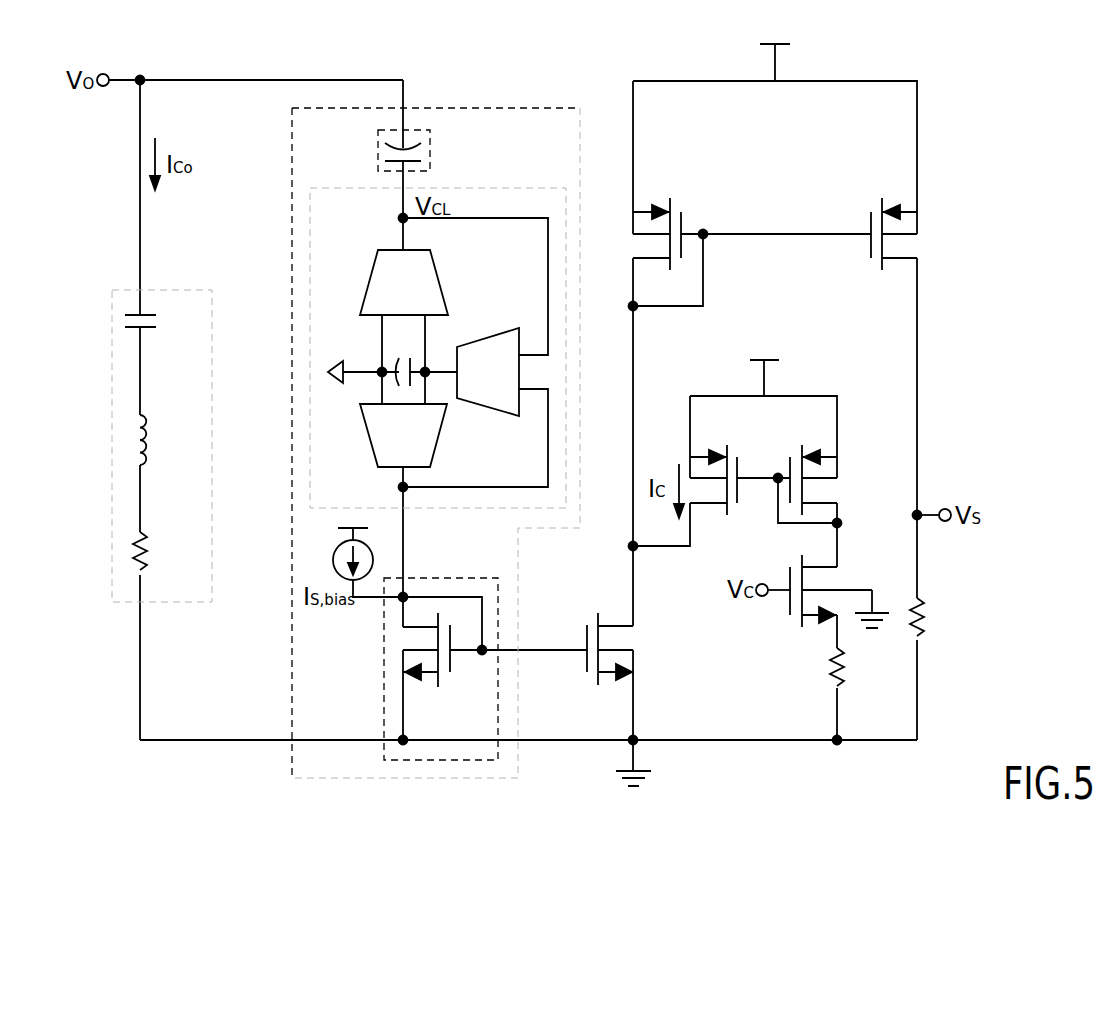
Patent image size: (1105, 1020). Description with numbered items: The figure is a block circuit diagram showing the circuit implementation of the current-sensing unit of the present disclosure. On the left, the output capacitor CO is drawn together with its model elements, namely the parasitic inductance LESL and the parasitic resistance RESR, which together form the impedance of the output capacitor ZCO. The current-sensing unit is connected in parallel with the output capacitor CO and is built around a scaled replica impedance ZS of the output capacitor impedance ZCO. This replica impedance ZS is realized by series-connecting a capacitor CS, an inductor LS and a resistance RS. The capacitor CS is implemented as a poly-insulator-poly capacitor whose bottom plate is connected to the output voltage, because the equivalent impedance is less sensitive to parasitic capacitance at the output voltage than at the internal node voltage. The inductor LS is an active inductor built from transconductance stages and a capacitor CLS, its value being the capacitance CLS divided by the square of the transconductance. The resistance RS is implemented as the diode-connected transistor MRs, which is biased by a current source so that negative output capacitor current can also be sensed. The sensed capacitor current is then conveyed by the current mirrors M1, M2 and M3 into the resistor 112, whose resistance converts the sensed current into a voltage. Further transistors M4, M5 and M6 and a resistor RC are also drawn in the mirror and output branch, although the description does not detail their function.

The resistor 112 is at (918, 639).
The current mirror transistor M1 is at (610, 670).
The current mirror transistor M2 is at (662, 220).
The current mirror transistor M3 is at (894, 220).
The transistor M4 is at (831, 608).
The transistor M5 is at (813, 465).
The transistor M6 is at (715, 465).
The diode-connected transistor MRs is at (442, 670).
The resistor RC is at (852, 667).
The output capacitor CO is at (157, 329).
The parasitic inductance LESL is at (169, 440).
The parasitic resistance RESR is at (168, 551).
The impedance of the output capacitor ZCO is at (170, 290).
The capacitor CS is at (386, 150).
The capacitor CLS is at (404, 358).
The inductor LS is at (508, 188).
The scaled replica impedance ZS is at (292, 640).
The resistance RS is at (384, 663).